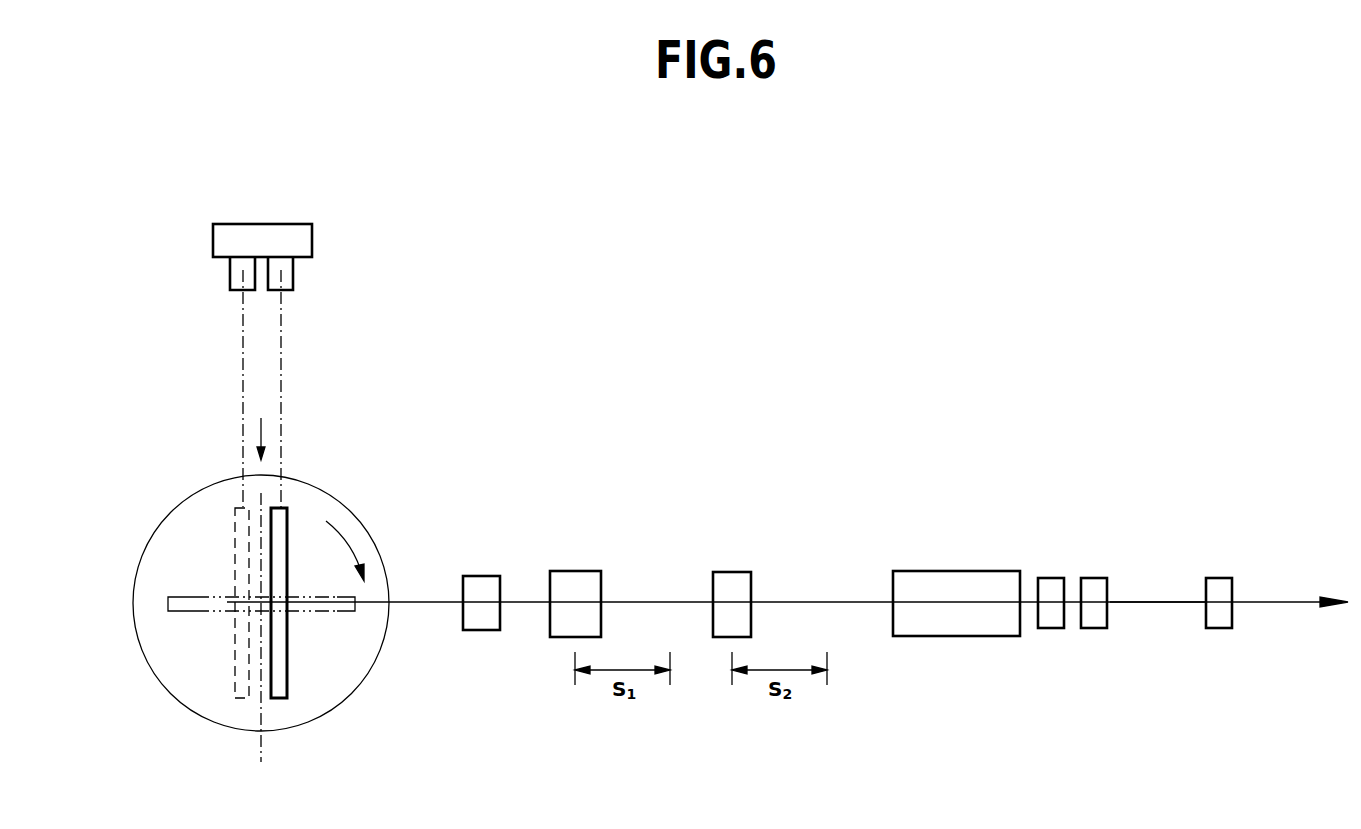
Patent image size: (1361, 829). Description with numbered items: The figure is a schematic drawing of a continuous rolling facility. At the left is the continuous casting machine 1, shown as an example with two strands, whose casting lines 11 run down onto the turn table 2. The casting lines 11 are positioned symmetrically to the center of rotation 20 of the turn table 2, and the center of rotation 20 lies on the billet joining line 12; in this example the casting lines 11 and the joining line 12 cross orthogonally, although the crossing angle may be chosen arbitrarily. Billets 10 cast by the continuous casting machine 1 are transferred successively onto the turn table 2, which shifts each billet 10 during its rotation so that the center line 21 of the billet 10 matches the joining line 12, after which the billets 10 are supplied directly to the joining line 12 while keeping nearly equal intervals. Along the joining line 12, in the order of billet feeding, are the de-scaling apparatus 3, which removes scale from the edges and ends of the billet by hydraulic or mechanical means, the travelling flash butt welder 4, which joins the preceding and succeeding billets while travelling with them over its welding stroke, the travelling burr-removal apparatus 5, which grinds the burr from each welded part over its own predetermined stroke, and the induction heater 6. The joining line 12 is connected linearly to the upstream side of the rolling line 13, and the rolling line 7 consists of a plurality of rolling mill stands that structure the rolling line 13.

The continuous casting machine 1 is at (312, 242).
The casting line 11 is at (242, 490).
The turn table 2 is at (340, 500).
The center of rotation 20 is at (260, 603).
The billet 10 is at (288, 683).
The center line 21 is at (258, 710).
The de-scaling apparatus 3 is at (484, 576).
The travelling flash butt welder 4 is at (580, 571).
The travelling burr-removal apparatus 5 is at (731, 572).
The billet joining line 12 is at (525, 602).
The induction heater 6 is at (948, 623).
The rolling line 7 is at (1228, 563).
The rolling line 13 is at (1180, 602).